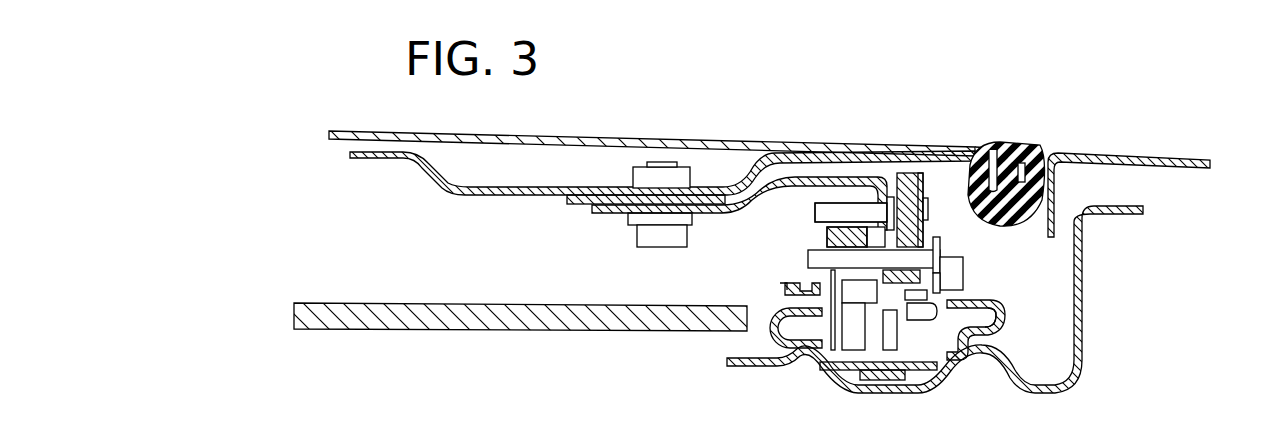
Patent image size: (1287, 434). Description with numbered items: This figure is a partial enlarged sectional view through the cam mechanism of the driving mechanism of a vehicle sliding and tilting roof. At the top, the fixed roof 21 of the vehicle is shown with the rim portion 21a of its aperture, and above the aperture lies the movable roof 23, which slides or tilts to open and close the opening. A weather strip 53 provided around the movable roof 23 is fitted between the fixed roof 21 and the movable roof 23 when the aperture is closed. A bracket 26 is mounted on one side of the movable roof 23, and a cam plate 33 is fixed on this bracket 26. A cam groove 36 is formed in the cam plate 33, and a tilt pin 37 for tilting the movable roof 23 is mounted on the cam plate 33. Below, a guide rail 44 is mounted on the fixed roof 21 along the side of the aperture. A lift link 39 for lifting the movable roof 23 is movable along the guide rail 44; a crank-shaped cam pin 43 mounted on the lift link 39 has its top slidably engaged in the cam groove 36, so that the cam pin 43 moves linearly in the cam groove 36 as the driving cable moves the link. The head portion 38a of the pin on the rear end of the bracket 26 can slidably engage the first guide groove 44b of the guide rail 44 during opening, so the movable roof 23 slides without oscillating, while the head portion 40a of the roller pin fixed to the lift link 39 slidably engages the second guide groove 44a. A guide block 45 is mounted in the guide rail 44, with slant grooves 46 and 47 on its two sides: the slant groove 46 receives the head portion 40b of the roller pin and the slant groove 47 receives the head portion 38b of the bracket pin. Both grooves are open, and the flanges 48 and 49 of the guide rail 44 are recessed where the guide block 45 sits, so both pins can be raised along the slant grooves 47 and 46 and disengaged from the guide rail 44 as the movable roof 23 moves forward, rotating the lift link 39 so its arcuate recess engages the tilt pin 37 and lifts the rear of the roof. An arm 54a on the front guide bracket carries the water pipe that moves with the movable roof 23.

The movable roof 23 is at (604, 132).
The bracket 26 is at (858, 158).
The fixed roof 21 is at (1075, 153).
The rim portion 21a is at (1060, 193).
The weather strip 53 is at (1013, 143).
The cam plate 33 is at (910, 240).
The cam groove 36 is at (921, 245).
The tilt pin 37 is at (822, 205).
The lift link 39 is at (814, 238).
The cam pin 43 is at (810, 252).
The head portion of pin 38a is at (967, 260).
The head portion of pin 38b is at (940, 292).
The flange 49 is at (947, 300).
The guide rail 44 is at (1002, 330).
The second guide groove 44a is at (817, 337).
The first guide groove 44b is at (1003, 315).
The flange 48 is at (783, 305).
The arm 54a is at (787, 283).
The head portion of roller pin 40a is at (810, 327).
The head portion of roller pin 40b is at (852, 340).
The guide block 45 is at (883, 357).
The slant groove 46 is at (875, 348).
The slant groove 47 is at (910, 288).